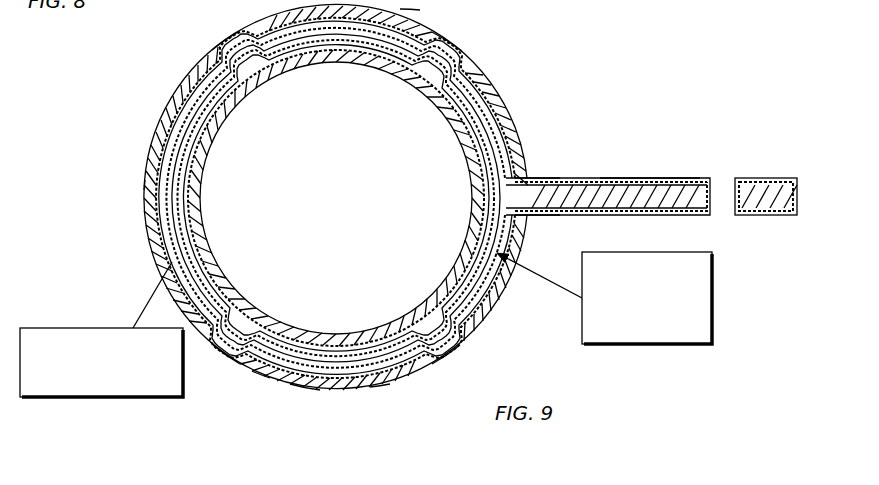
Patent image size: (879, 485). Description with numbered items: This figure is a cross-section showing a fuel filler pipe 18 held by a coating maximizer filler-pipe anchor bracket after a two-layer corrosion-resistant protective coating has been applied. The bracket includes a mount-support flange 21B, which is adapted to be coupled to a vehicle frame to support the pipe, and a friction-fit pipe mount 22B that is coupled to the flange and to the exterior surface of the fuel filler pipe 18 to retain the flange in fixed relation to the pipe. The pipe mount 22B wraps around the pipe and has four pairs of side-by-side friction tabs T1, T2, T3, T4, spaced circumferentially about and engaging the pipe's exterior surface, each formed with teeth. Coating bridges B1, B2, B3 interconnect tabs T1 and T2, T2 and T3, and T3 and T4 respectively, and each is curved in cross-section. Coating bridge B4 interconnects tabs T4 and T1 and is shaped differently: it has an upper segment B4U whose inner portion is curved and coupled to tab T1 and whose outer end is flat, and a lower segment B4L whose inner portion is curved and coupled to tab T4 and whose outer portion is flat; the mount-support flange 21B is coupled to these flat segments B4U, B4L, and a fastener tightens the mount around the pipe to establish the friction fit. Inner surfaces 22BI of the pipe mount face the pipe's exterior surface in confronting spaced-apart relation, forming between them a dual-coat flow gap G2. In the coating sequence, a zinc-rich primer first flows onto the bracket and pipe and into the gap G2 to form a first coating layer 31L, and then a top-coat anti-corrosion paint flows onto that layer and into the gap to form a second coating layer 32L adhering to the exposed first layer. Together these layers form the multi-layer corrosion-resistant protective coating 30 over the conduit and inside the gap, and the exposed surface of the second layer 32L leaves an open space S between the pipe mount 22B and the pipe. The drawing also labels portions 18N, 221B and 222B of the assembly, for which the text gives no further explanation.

The fuel filler pipe 18 is at (212, 229).
The fuel filler pipe neck portion 18N is at (305, 334).
The mount-support flange 21B is at (776, 218).
The friction-fit pipe mount 22B is at (521, 107).
The inner surfaces 22BI is at (325, 40).
The first wall portion 221B is at (175, 95).
The second wall portion 222B is at (696, 195).
The multi-layer corrosion-resistant protective coating 30 is at (635, 135).
The first coating layer 31L is at (604, 178).
The second coating layer 32L is at (567, 178).
The coating bridge B1 is at (410, 20).
The coating bridge B2 is at (155, 178).
The coating bridge B3 is at (383, 386).
The coating bridge B4 is at (690, 180).
The upper segment B4U is at (515, 132).
The lower segment B4L is at (528, 228).
The friction tab T1 is at (437, 92).
The friction tab T2 is at (245, 85).
The friction tab T3 is at (243, 306).
The friction tab T4 is at (433, 297).
The dual-coat flow gap G2 is at (68, 328).
The open space S is at (263, 368).